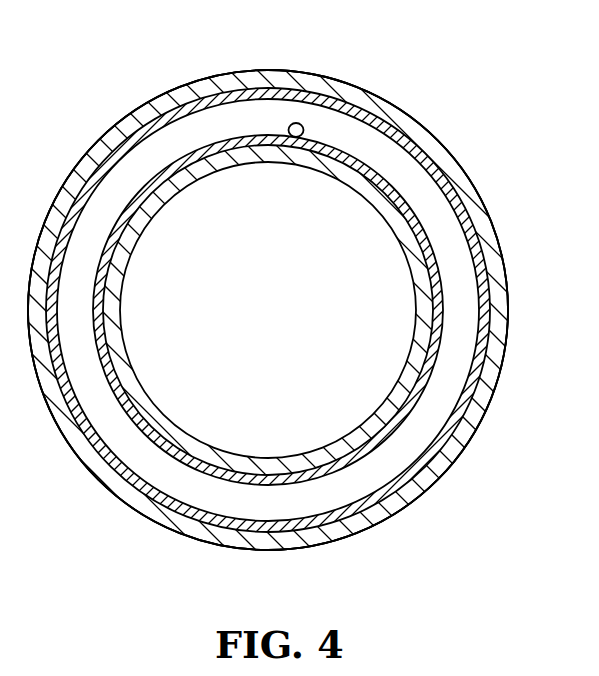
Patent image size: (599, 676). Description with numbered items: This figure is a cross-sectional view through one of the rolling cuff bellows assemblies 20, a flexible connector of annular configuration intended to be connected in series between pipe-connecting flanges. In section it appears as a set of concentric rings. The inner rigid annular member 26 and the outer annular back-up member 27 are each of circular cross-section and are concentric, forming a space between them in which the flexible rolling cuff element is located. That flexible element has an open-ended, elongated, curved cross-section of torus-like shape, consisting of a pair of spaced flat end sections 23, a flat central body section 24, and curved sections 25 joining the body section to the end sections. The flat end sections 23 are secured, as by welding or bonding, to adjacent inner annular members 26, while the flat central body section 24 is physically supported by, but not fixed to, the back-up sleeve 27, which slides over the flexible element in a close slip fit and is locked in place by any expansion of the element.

The rolling cuff bellows assembly 20 is at (360, 50).
The flat end section 23 is at (300, 137).
The flat central body section 24 is at (453, 226).
The curved section 25 is at (462, 288).
The inner rigid annular member 26 is at (174, 197).
The outer annular back-up member 27 is at (440, 146).